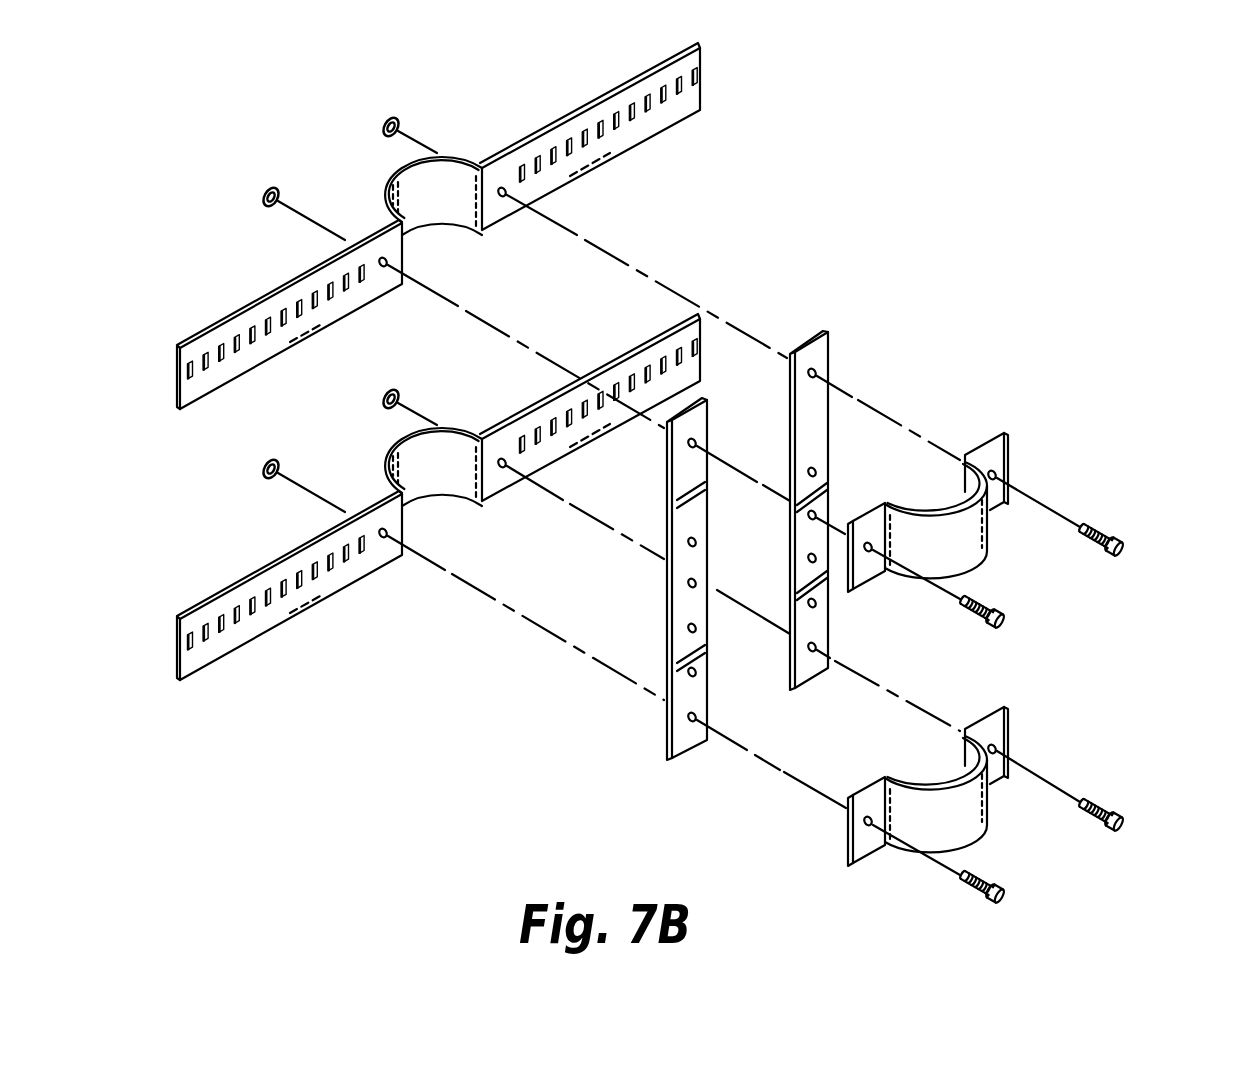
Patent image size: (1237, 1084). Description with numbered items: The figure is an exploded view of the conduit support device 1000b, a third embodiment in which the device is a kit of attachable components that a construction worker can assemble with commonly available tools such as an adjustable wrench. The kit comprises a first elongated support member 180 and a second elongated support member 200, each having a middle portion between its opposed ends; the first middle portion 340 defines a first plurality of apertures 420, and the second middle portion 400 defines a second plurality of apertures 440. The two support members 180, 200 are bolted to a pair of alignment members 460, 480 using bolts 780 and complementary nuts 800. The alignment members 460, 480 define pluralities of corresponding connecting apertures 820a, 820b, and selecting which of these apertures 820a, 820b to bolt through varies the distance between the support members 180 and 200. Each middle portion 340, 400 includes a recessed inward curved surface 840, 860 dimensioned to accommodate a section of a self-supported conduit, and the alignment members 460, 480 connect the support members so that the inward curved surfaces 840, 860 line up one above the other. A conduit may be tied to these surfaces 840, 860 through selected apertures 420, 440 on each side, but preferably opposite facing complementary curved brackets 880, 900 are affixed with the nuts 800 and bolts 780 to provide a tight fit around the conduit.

The conduit support device 1000b is at (1084, 207).
The first elongated support member 180 is at (472, 226).
The second elongated support member 200 is at (478, 459).
The first middle portion 340 is at (430, 186).
The second middle portion 400 is at (491, 469).
The first plurality of apertures 420 is at (667, 102).
The second plurality of apertures 440 is at (700, 352).
The alignment member 460 is at (647, 579).
The alignment member 480 is at (862, 499).
The bolts 780 is at (1112, 563).
The nuts 800 is at (383, 128).
The connecting apertures 820a is at (690, 626).
The connecting apertures 820b is at (817, 606).
The inward curved surface 840 is at (447, 217).
The inward curved surface 860 is at (438, 480).
The curved bracket 880 is at (947, 503).
The curved bracket 900 is at (940, 778).